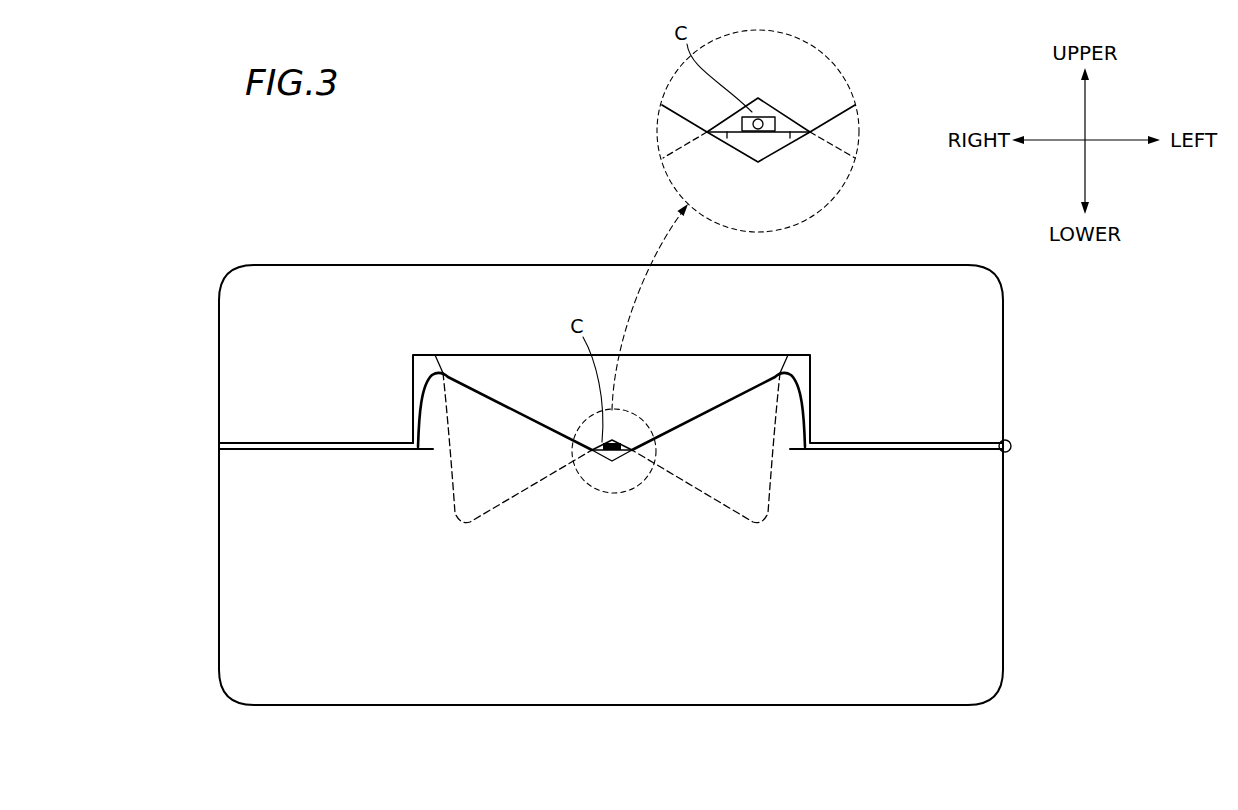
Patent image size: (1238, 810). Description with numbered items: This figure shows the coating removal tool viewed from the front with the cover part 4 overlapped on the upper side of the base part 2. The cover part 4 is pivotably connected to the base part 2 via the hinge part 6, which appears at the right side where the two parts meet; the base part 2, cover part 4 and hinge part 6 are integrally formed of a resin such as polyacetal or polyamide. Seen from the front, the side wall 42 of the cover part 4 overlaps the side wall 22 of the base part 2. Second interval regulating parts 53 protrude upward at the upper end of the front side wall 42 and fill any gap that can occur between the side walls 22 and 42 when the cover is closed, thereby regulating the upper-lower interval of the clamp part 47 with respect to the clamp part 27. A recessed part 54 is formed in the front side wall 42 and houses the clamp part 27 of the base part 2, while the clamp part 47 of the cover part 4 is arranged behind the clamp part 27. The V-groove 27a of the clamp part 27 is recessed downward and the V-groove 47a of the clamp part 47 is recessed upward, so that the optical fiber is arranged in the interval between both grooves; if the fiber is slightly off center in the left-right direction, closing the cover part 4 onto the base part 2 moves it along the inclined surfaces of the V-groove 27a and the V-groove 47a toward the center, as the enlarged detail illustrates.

The base part 2 is at (887, 705).
The cover part 4 is at (941, 265).
The hinge part 6 is at (1012, 440).
The side wall 22 is at (923, 578).
The clamp part 27 is at (480, 428).
The V-groove 27a is at (598, 442).
The side wall 42 is at (942, 342).
The clamp part 47 is at (704, 388).
The V-groove 47a is at (641, 440).
The second interval regulating part 53 is at (300, 449).
The recessed part 54 is at (413, 357).